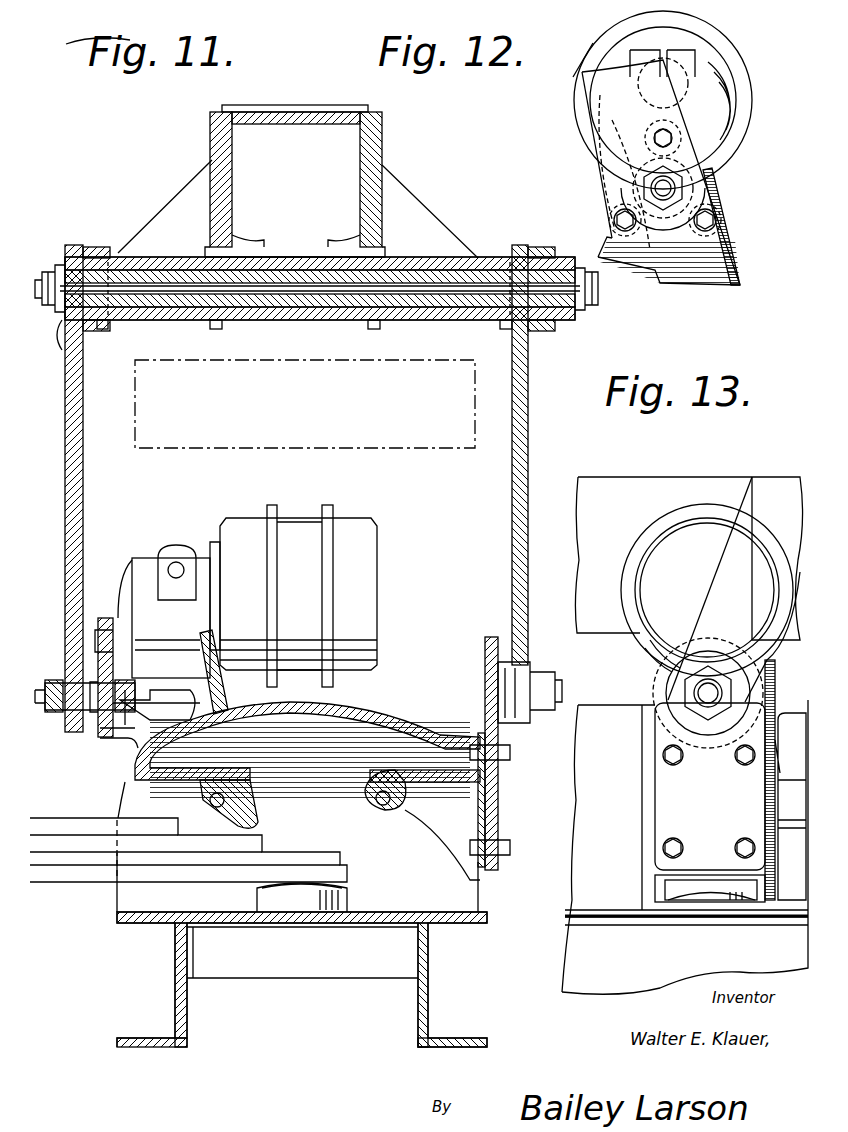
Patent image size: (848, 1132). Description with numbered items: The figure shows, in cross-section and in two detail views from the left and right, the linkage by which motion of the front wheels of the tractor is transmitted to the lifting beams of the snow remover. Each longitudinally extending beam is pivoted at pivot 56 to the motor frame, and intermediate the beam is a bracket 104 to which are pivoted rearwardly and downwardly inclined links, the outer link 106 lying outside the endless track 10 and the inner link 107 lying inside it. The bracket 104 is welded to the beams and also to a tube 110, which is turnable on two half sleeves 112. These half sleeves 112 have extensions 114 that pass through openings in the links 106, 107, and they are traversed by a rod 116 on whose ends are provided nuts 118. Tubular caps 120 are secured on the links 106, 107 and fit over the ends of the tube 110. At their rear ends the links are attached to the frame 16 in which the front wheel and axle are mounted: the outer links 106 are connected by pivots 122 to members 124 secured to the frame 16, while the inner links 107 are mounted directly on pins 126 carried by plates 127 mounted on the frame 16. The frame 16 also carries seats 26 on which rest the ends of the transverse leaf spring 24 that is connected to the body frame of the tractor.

In FIG. 11, the endless track 10 is at (188, 433).
In FIG. 11, the frame 16 is at (448, 993).
In FIG. 12, the frame 16 is at (735, 255).
In FIG. 13, the frame 16 is at (608, 714).
In FIG. 11, the transverse leaf spring 24 is at (85, 882).
In FIG. 13, the transverse leaf spring 24 is at (665, 880).
In FIG. 11, the seats 26 is at (318, 905).
In FIG. 13, the seats 26 is at (702, 900).
In FIG. 11, the pivot 56 is at (382, 150).
In FIG. 11, the bracket 104 is at (415, 213).
In FIG. 11, the outer link 106 is at (512, 493).
In FIG. 13, the outer link 106 is at (735, 505).
In FIG. 11, the inner link 107 is at (83, 495).
In FIG. 12, the inner link 107 is at (603, 103).
In FIG. 11, the tube 110 is at (150, 262).
In FIG. 11, the half sleeves 112 is at (255, 322).
In FIG. 11, the extensions 114 is at (70, 345).
In FIG. 11, the rod 116 is at (105, 257).
In FIG. 11, the nuts 118 is at (50, 285).
In FIG. 11, the tubular caps 120 is at (140, 322).
In FIG. 11, the pivots 122 is at (485, 685).
In FIG. 13, the pivots 122 is at (705, 692).
In FIG. 11, the members 124 is at (478, 740).
In FIG. 13, the members 124 is at (675, 805).
In FIG. 11, the pins 126 is at (60, 705).
In FIG. 12, the pins 126 is at (703, 165).
In FIG. 11, the plates 127 is at (105, 618).
In FIG. 12, the plates 127 is at (722, 186).